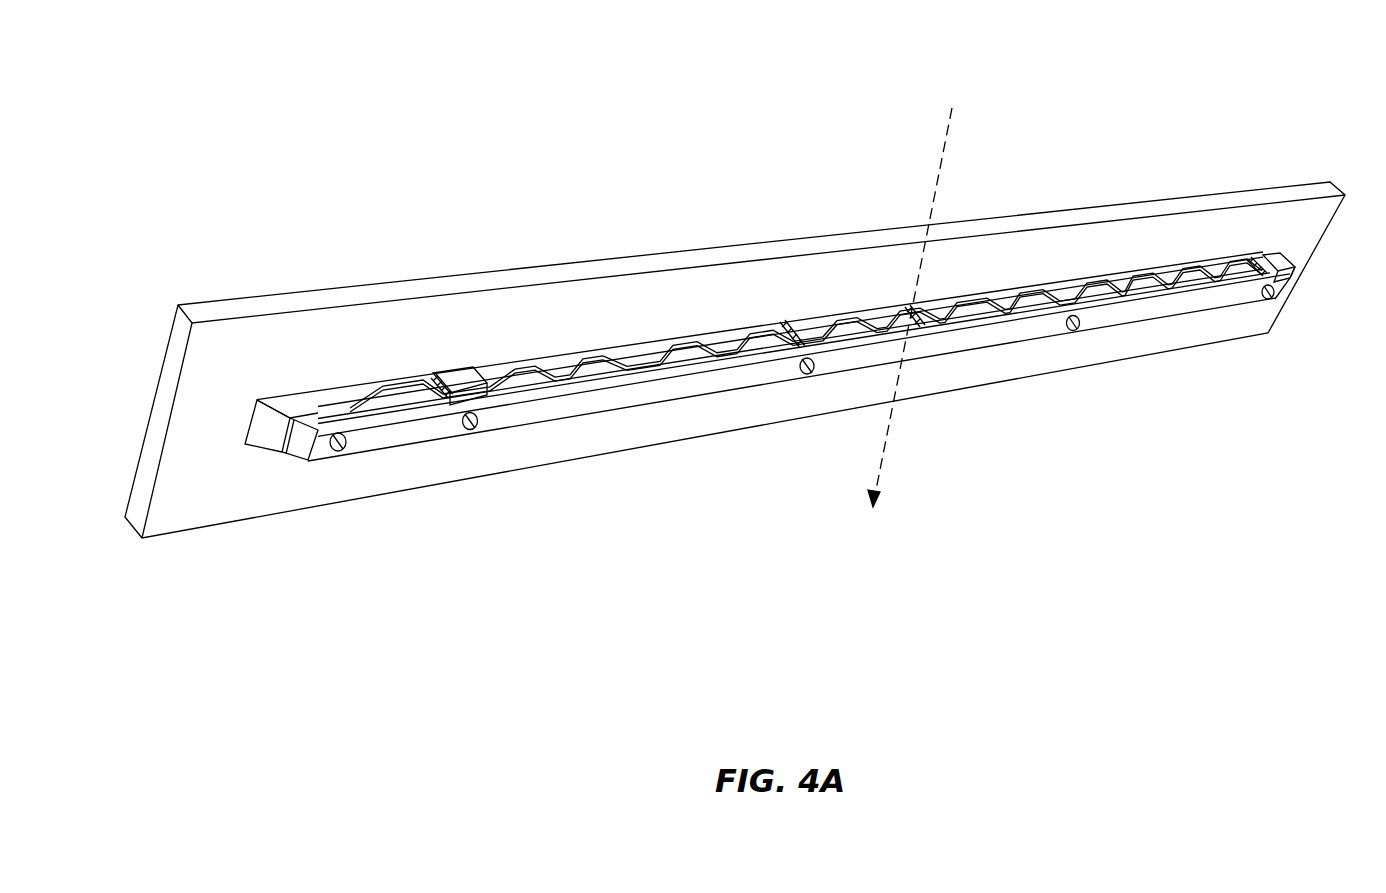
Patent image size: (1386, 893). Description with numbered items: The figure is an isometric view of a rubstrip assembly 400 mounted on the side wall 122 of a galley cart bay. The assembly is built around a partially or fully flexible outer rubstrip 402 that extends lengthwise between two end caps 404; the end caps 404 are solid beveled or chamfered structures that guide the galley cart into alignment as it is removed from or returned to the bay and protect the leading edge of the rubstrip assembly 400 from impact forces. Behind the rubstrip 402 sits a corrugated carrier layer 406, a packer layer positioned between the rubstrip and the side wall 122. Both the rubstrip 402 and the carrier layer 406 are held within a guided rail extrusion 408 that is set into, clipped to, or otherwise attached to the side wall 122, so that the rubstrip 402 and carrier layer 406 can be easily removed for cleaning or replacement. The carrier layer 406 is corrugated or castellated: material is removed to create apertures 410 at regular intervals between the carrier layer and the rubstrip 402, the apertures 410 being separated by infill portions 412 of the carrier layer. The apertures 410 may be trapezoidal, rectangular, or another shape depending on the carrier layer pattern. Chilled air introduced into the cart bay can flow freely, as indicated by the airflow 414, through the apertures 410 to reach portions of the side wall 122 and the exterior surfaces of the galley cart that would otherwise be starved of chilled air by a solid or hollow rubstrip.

The rubstrip assembly 400 is at (247, 96).
The side wall 122 is at (1167, 238).
The outer rubstrip 402 is at (1000, 335).
The end caps 404 is at (272, 430).
The corrugated carrier layer 406 is at (663, 357).
The guided rail extrusion 408 is at (458, 383).
The apertures 410 is at (600, 365).
The infill portions 412 is at (870, 325).
The airflow 414 is at (937, 180).